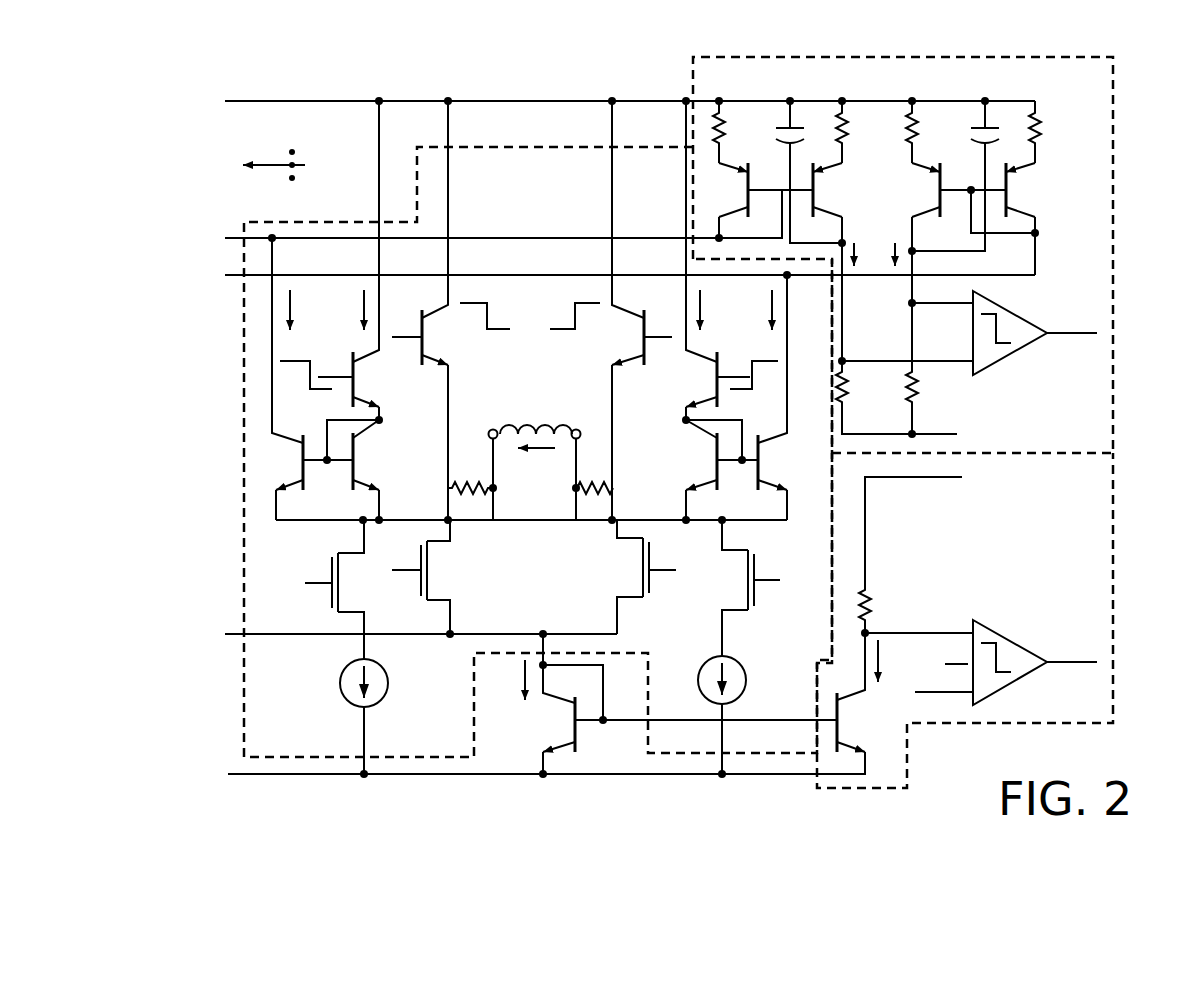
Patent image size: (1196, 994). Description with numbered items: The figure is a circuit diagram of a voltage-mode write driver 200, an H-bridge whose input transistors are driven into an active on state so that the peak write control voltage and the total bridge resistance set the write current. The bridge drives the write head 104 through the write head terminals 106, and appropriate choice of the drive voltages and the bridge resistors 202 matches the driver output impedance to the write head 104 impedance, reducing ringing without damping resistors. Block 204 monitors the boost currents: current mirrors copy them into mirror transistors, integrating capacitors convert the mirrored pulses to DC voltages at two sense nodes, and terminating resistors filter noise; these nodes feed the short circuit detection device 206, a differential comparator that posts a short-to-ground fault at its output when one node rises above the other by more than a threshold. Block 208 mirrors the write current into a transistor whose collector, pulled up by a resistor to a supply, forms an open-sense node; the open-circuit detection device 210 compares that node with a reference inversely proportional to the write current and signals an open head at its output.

The voltage-mode write driver 200 is at (596, 442).
The sense resistors R1 and R2 202 is at (590, 500).
The boost current monitoring circuitry block 204 is at (944, 255).
The short circuit detection device 206 is at (1010, 300).
The open-circuit detection block 208 is at (1006, 620).
The open-circuit detection device 210 is at (990, 630).
The write head 104 is at (517, 388).
The write head terminals 106 is at (582, 433).